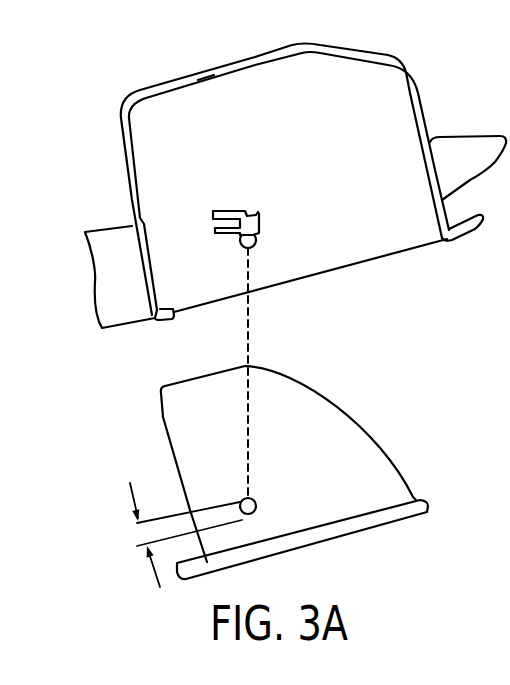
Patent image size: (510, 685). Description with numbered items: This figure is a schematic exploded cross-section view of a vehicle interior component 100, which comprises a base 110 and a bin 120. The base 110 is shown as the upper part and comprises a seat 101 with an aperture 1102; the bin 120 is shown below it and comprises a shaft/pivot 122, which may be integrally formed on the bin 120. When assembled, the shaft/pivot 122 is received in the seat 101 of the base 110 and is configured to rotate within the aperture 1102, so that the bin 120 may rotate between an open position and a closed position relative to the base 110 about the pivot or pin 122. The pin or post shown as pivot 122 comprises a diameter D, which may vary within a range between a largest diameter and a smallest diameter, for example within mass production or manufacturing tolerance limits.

The interior component 100 is at (125, 78).
The base 110 is at (127, 175).
The seat 101 is at (280, 236).
The aperture 1102 is at (213, 212).
The bin 120 is at (160, 428).
The shaft/pivot 122 is at (242, 499).
The diameter D is at (140, 533).